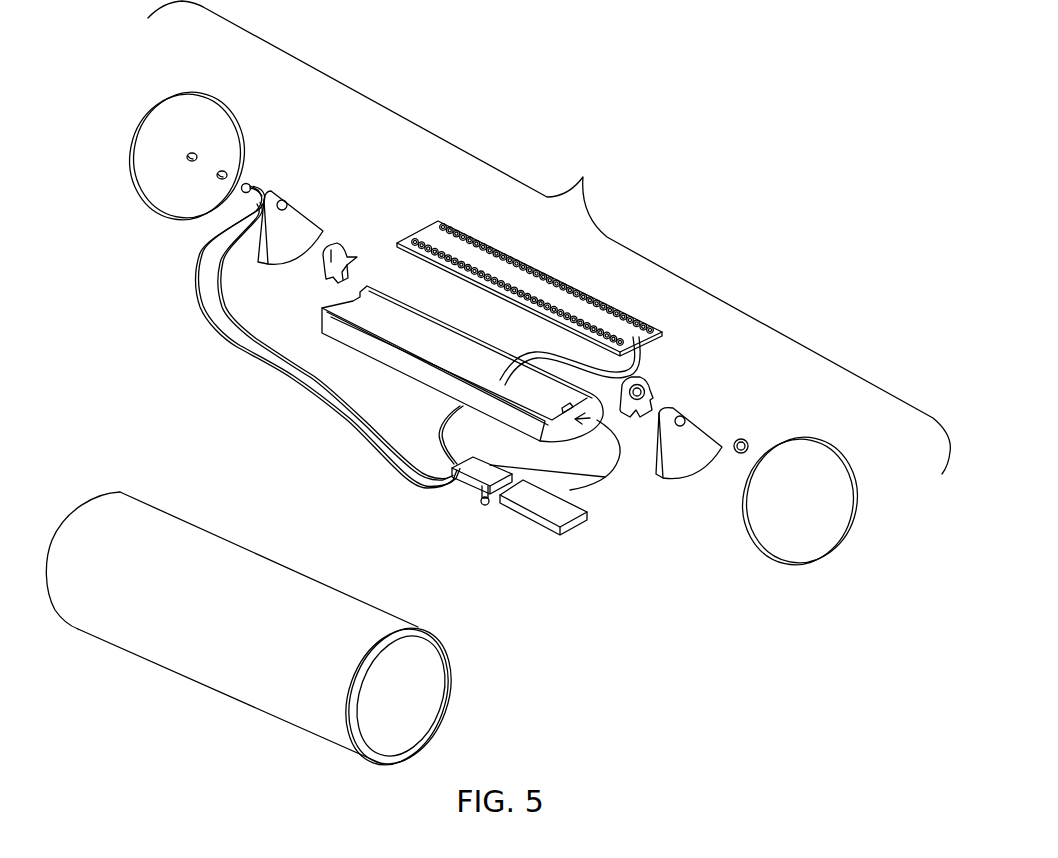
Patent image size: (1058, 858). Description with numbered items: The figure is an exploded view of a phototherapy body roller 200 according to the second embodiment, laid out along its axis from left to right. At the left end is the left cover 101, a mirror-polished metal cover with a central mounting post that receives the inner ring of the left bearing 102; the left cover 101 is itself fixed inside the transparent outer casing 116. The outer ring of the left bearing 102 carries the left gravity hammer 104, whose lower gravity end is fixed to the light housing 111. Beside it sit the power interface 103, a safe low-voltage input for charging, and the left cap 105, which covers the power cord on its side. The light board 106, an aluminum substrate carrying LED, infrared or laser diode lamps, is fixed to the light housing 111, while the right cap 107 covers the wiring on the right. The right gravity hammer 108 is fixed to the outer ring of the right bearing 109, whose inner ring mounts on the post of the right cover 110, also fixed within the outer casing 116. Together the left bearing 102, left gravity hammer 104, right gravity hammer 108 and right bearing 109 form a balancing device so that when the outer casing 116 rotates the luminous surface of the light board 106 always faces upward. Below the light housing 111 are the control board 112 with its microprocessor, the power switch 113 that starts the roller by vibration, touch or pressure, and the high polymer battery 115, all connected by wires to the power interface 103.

The phototherapy body roller 200 is at (678, 143).
The left cover 101 is at (218, 133).
The left bearing 102 is at (226, 173).
The power interface 103 is at (250, 188).
The left gravity hammer 104 is at (280, 223).
The left cap 105 is at (350, 255).
The light board 106 is at (552, 277).
The right cap 107 is at (645, 382).
The right gravity hammer 108 is at (693, 430).
The right bearing 109 is at (745, 440).
The right cover 110 is at (827, 467).
The light housing 111 is at (435, 372).
The control board 112 is at (455, 476).
The power switch 113 is at (472, 492).
The battery 115 is at (533, 518).
The outer casing 116 is at (227, 672).